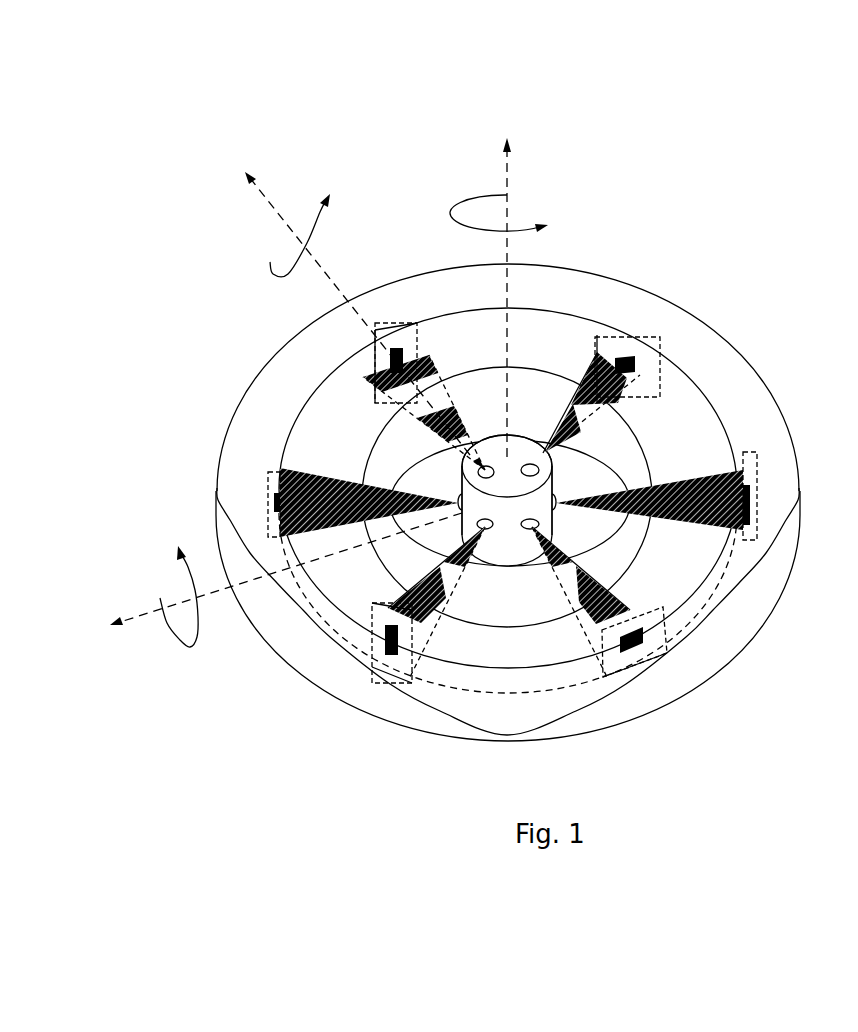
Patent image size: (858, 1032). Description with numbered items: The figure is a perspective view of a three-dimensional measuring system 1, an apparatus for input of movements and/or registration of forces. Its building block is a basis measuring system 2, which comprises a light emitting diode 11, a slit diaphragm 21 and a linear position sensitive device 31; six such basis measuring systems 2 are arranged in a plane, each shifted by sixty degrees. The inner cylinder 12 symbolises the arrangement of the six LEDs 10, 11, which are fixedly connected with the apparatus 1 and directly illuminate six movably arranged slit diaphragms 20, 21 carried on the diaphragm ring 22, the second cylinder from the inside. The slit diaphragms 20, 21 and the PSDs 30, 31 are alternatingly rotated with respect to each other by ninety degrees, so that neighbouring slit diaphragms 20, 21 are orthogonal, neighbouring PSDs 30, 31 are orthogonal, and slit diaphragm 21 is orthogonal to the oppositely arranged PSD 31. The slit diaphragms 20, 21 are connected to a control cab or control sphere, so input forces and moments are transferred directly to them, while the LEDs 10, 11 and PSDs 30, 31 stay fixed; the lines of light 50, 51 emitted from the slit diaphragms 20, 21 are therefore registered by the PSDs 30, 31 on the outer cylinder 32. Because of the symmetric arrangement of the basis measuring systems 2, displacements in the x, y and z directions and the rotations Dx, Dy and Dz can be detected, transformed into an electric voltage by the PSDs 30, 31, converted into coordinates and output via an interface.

The 3D measuring system 1 is at (146, 203).
The basis measuring system 2 is at (763, 233).
The LED 10 is at (480, 474).
The light emitting diode 11 is at (508, 461).
The inner cylinder 12 is at (473, 503).
The slit diaphragm 20 is at (660, 523).
The slit diaphragm 21 is at (622, 363).
The diaphragm ring 22 is at (623, 452).
The PSD 30 is at (753, 505).
The linear position sensitive device 31 is at (641, 368).
The outer cylinder 32 is at (580, 636).
The line of light 50 is at (731, 546).
The line of light 51 is at (583, 404).